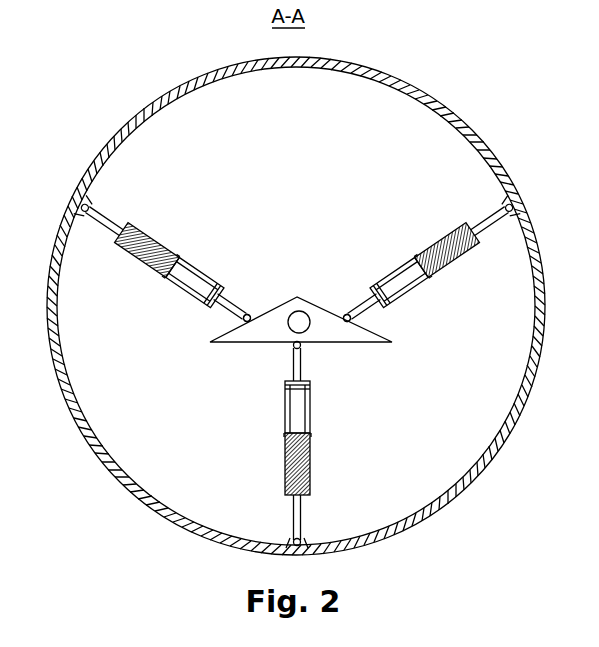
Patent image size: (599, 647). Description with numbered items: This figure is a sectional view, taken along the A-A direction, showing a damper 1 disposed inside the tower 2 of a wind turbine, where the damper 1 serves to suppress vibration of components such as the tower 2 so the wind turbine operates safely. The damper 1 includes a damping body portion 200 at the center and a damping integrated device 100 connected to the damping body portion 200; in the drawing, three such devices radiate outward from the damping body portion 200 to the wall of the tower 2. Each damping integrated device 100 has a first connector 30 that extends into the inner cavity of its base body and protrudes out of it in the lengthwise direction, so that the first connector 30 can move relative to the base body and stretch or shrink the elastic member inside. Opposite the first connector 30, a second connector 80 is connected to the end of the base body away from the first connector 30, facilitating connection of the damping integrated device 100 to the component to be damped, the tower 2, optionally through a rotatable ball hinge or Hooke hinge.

The damper 1 is at (416, 384).
The tower 2 is at (107, 476).
The first connector 30 is at (291, 360).
The second connector 80 is at (292, 513).
The damping integrated device 100 is at (319, 455).
The damping body portion 200 is at (338, 352).